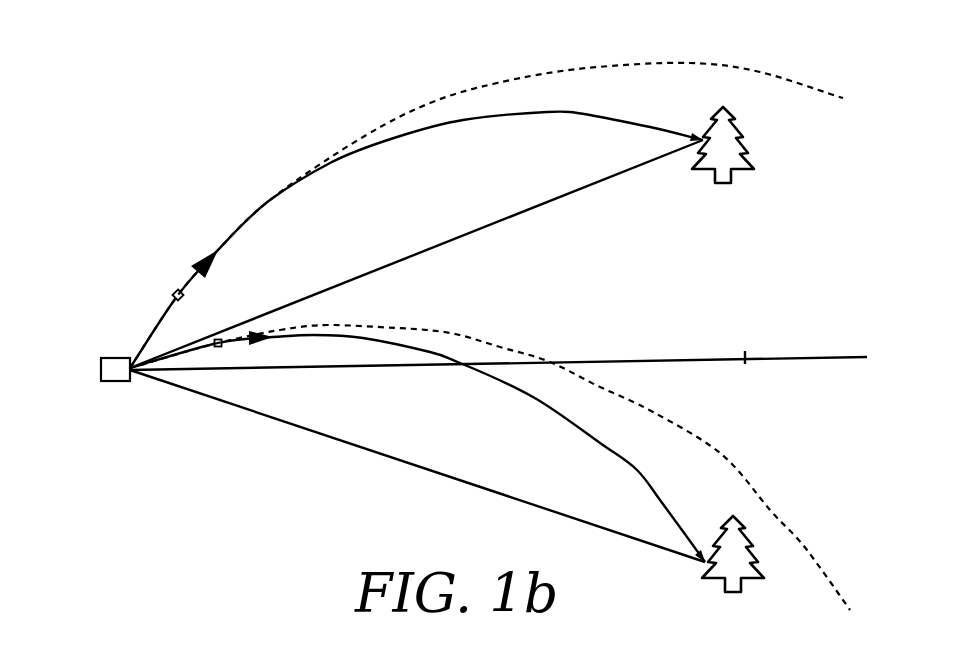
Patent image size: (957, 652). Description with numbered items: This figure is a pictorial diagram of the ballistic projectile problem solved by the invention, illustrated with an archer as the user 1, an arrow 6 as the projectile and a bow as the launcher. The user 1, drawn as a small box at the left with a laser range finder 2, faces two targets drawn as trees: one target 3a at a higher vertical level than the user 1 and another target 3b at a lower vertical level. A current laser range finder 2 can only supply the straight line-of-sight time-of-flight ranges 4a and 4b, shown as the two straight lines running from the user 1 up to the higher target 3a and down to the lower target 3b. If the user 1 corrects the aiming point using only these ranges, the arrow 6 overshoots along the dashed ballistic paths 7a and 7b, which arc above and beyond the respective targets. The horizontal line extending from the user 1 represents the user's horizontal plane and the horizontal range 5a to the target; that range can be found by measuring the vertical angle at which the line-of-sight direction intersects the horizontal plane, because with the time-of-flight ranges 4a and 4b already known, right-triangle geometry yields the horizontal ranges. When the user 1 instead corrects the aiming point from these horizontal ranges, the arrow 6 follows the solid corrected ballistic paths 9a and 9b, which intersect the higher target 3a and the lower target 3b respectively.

The user 1 is at (98, 372).
The laser range finder 2 is at (134, 382).
The target 3a is at (762, 150).
The target 3b is at (773, 558).
The time-of-flight range 4a is at (485, 229).
The time-of-flight range 4b is at (426, 470).
The horizontal range 5a is at (603, 357).
The arrow 6 is at (185, 288).
The ballistic path 7a is at (688, 65).
The ballistic path 7b is at (720, 453).
The corrected ballistic path 9a is at (593, 113).
The corrected ballistic path 9b is at (635, 468).